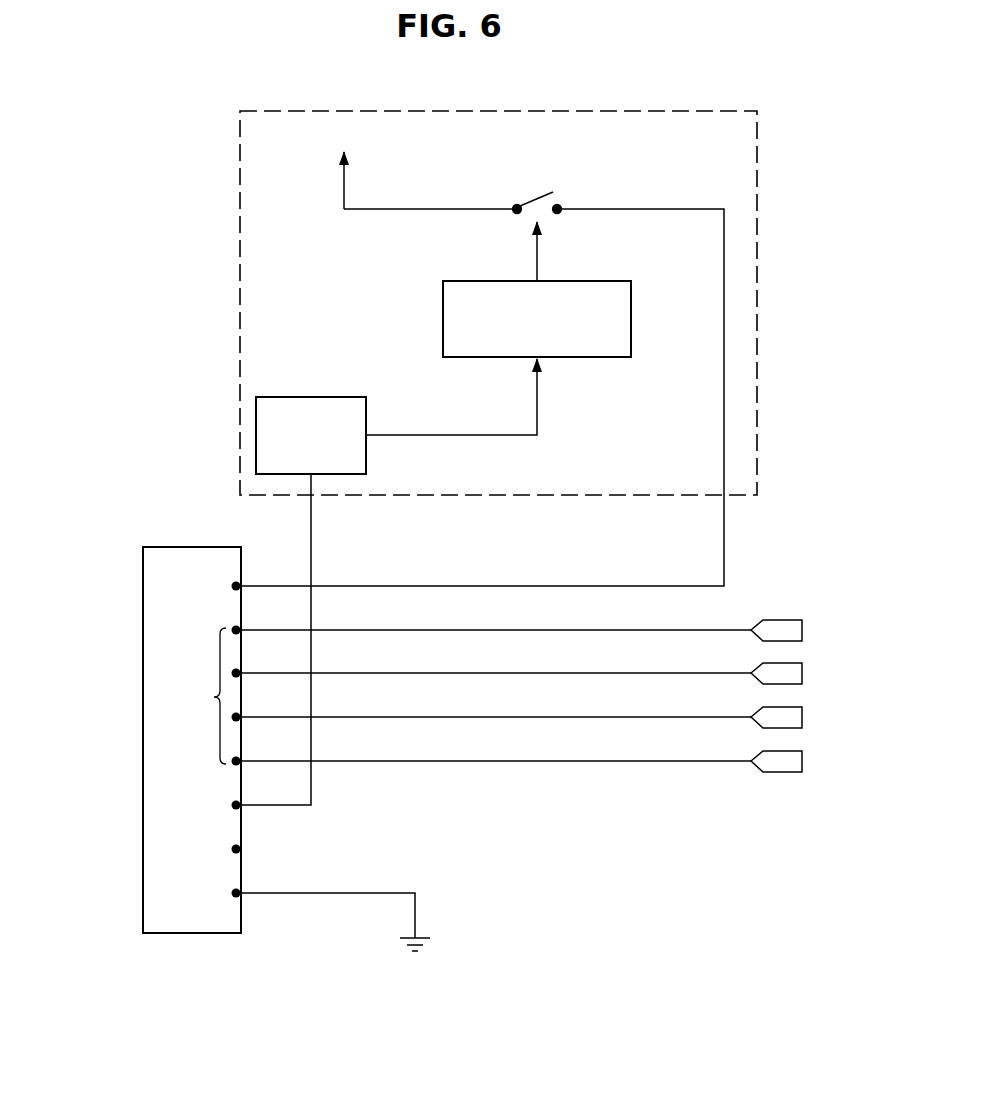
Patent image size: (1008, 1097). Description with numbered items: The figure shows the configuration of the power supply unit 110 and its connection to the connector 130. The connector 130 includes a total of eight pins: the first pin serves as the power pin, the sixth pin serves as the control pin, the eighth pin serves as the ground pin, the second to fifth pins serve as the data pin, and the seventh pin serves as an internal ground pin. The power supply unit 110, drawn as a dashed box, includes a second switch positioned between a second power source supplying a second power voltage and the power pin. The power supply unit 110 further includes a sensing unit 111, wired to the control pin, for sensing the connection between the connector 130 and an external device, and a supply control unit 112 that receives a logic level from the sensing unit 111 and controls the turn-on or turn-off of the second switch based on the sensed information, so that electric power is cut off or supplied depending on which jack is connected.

The power supply unit 110 is at (757, 267).
The sensing unit 111 is at (311, 395).
The supply control unit 112 is at (632, 318).
The connector 130 is at (143, 740).